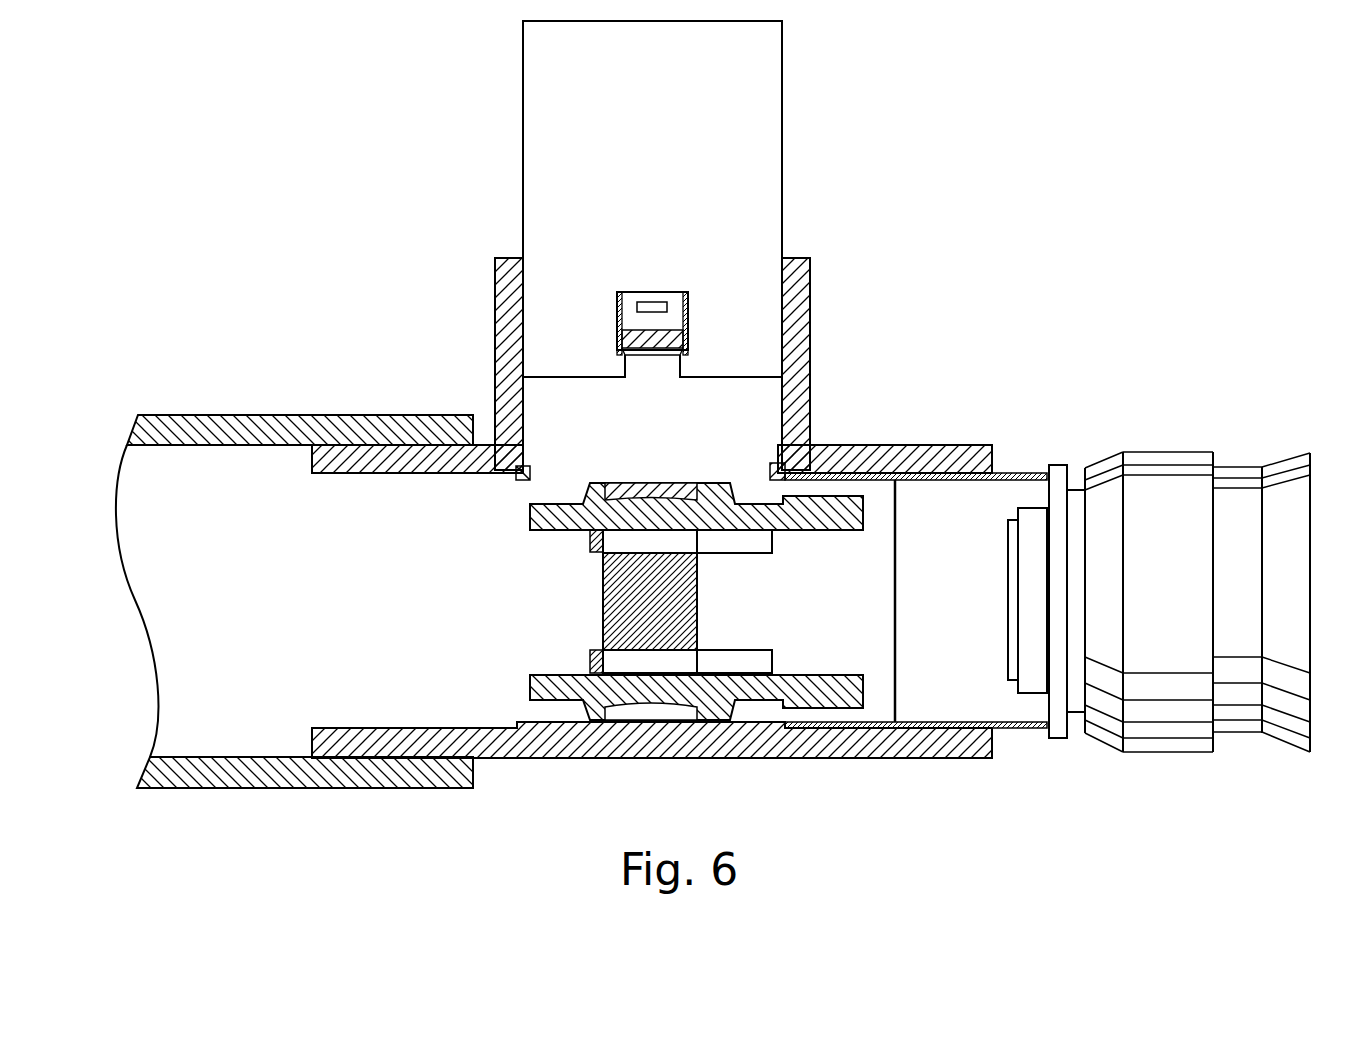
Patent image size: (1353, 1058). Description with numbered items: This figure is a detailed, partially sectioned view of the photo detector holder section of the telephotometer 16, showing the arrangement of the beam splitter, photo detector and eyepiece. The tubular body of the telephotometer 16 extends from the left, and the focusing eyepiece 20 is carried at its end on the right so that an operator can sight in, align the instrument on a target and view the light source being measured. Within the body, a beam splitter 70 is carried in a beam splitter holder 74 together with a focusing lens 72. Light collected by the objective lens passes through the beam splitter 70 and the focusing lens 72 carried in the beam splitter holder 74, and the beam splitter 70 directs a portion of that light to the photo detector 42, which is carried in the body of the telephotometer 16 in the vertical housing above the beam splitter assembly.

The telephotometer 16 is at (195, 413).
The focusing eyepiece 20 is at (1162, 450).
The photo detector 42 is at (690, 318).
The beam splitter 70 is at (603, 594).
The focusing lens 72 is at (660, 490).
The beam splitter holder 74 is at (550, 690).